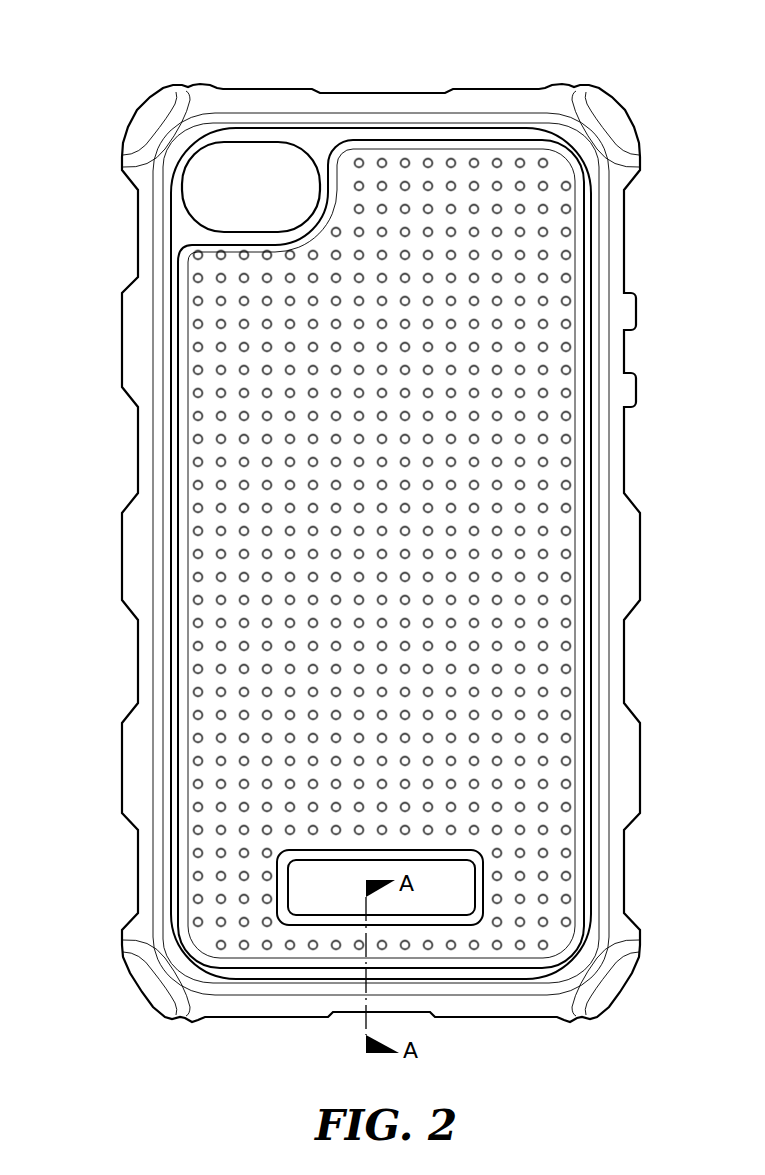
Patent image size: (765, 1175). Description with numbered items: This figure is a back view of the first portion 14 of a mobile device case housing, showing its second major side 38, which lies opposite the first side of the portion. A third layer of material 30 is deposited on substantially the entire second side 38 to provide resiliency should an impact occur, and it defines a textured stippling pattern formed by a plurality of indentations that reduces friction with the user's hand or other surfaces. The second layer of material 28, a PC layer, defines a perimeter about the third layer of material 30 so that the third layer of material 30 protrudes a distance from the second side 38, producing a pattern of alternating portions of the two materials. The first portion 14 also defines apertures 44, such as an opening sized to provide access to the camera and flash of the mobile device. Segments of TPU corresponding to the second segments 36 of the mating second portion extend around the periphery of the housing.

The first portion 14 is at (627, 62).
The second layer of material 28 is at (138, 652).
The third layer of material 30 is at (243, 330).
The second segments 36 is at (222, 526).
The second major side 38 is at (230, 424).
The apertures 44 is at (248, 193).